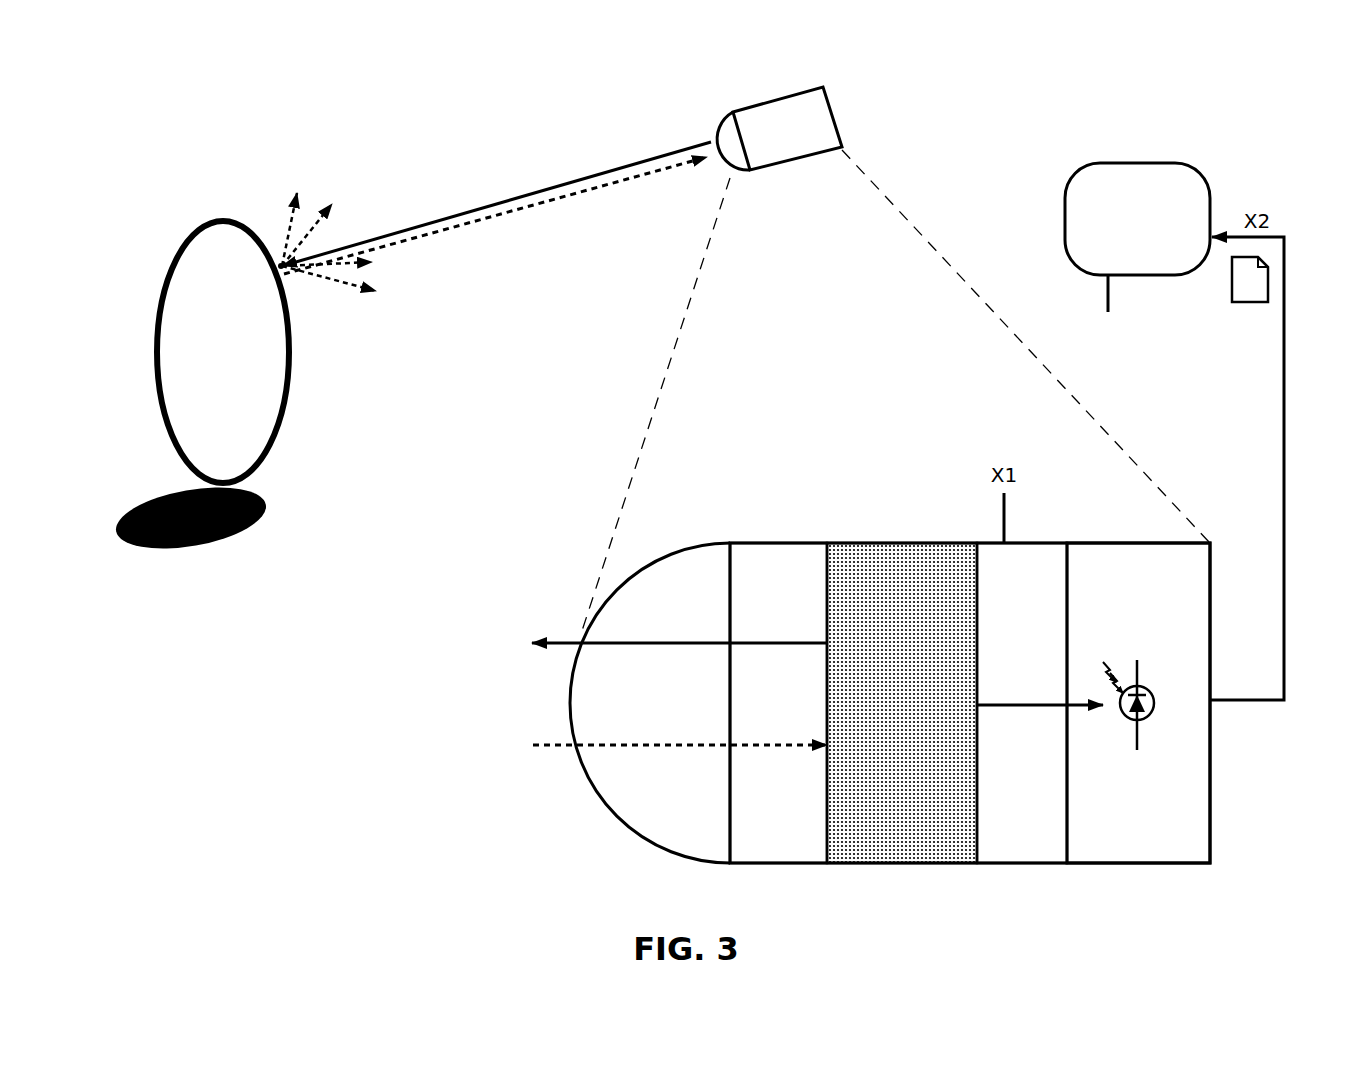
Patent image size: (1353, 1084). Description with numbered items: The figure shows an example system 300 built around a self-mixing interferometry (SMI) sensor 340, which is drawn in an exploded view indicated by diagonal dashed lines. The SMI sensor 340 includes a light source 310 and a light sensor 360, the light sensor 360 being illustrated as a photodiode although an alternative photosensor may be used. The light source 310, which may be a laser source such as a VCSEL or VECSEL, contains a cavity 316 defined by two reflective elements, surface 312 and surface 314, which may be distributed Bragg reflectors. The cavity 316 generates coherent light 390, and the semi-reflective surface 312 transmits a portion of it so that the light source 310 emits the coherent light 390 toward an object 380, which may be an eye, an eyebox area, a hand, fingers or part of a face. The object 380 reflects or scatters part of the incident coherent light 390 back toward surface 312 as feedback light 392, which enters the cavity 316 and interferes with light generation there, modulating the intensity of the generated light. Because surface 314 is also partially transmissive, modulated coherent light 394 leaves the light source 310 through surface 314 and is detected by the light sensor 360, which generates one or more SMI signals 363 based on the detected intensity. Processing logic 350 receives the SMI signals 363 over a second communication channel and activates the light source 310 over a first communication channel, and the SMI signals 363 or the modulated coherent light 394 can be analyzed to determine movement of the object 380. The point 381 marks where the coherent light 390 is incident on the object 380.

The system 300 is at (227, 85).
The light source 310 is at (890, 734).
The surface 312 is at (820, 584).
The surface 314 is at (984, 624).
The cavity 316 is at (882, 846).
The SMI sensor 340 is at (794, 95).
The processing logic 350 is at (1184, 249).
The light sensor 360 is at (1117, 614).
The SMI signal 363 is at (1250, 303).
The object 380 is at (208, 358).
The reflection point on eye 381 is at (276, 258).
The coherent light 390 is at (517, 199).
The feedback light 392 is at (518, 210).
The modulated coherent light 394 is at (997, 706).